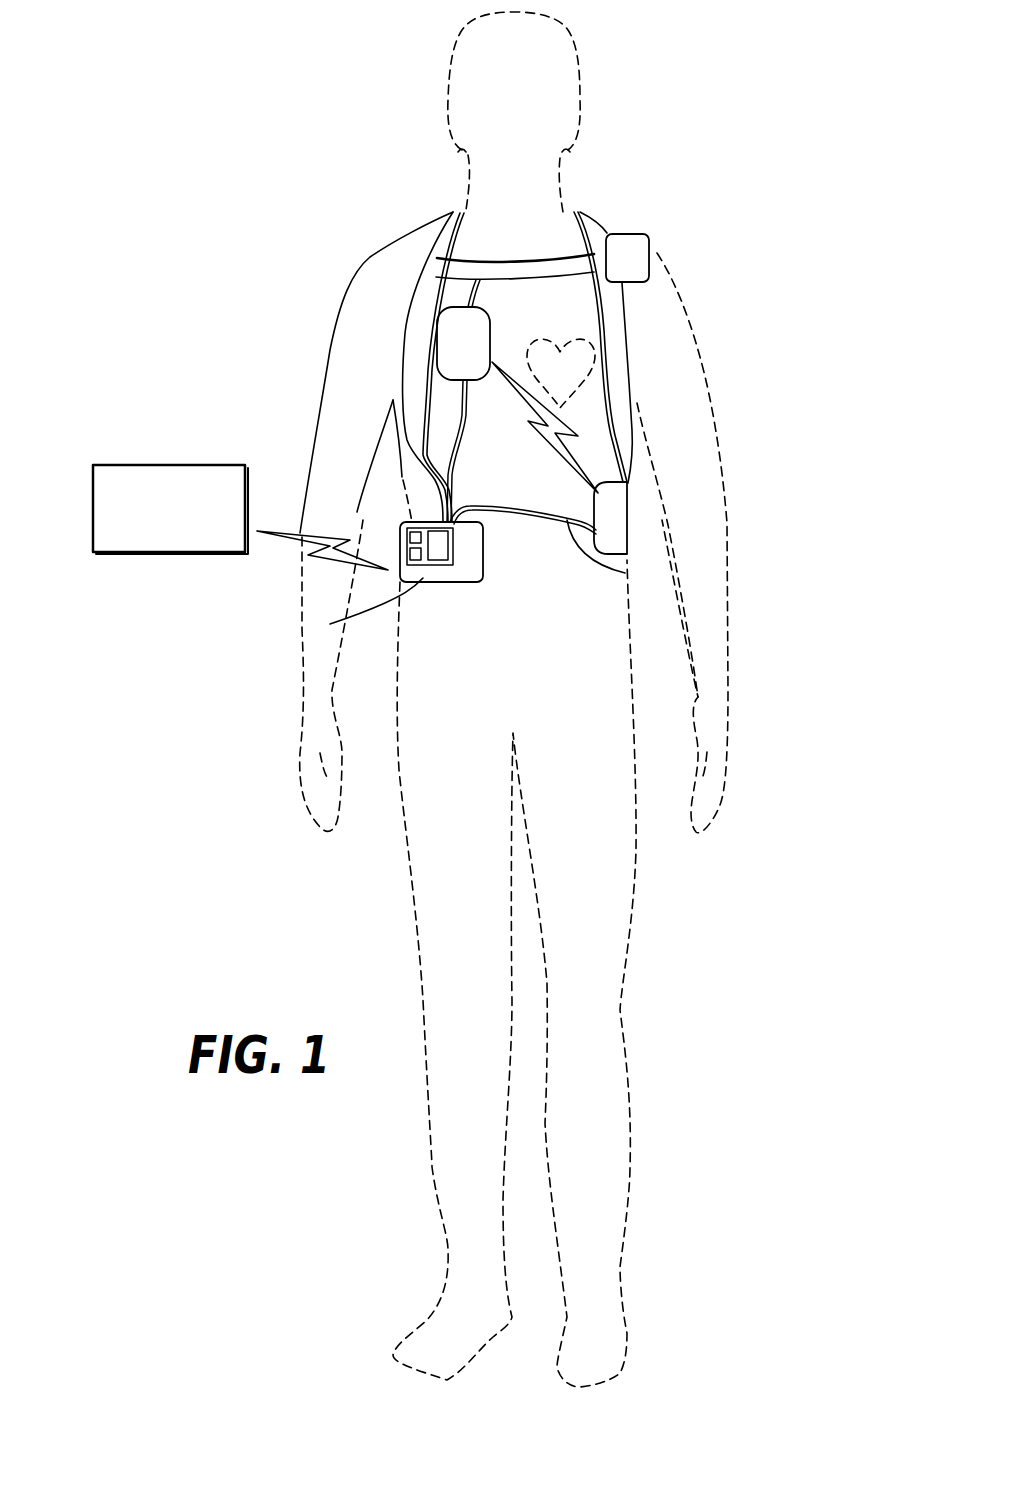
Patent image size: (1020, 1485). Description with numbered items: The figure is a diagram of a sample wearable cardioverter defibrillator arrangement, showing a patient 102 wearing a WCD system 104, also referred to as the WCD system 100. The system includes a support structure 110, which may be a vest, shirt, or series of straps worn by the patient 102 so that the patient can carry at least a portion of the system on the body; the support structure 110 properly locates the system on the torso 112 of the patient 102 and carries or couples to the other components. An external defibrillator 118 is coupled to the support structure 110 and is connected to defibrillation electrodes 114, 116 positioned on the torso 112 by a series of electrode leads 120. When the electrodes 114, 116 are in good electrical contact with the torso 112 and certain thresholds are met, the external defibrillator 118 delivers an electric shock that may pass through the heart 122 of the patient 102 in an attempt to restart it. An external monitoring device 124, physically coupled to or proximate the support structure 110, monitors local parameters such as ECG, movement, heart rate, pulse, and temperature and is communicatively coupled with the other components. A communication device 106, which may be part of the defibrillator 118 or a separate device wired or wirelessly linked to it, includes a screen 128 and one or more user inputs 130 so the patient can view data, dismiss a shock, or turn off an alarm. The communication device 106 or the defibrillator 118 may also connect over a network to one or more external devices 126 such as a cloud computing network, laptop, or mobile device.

The WCD system 100 is at (677, 82).
The patient 102 is at (455, 90).
The WCD system 104 is at (558, 255).
The communication device 106 is at (398, 545).
The support structure 110 is at (623, 371).
The torso 112 is at (587, 460).
The defibrillation electrode 114 is at (608, 502).
The defibrillation electrode 116 is at (440, 335).
The external defibrillator 118 is at (330, 624).
The electrode leads 120 is at (462, 412).
The heart 122 is at (607, 328).
The external monitoring device 124 is at (630, 236).
The external device 126 is at (160, 464).
The screen 128 is at (430, 538).
The user inputs 130 is at (408, 552).